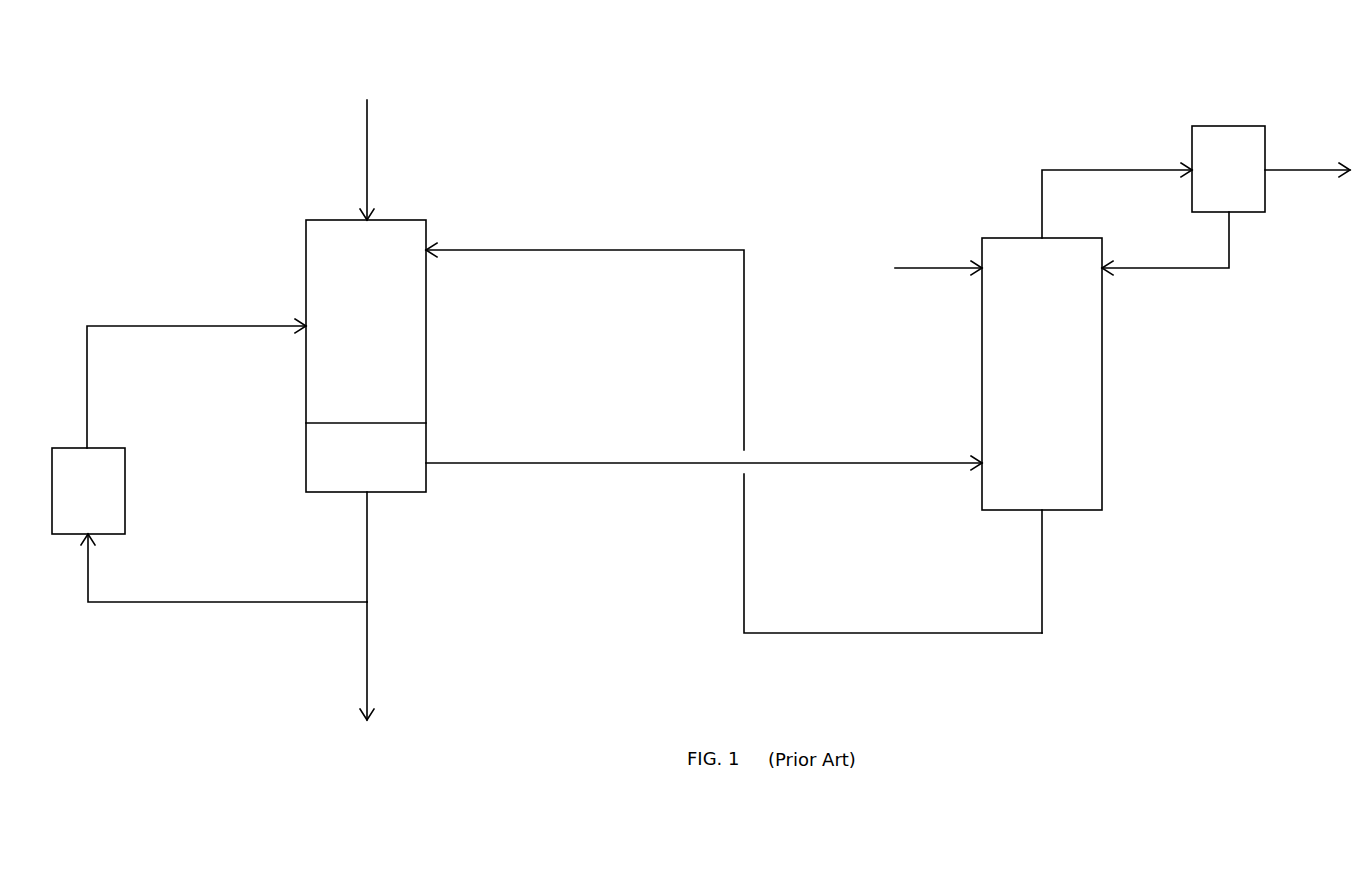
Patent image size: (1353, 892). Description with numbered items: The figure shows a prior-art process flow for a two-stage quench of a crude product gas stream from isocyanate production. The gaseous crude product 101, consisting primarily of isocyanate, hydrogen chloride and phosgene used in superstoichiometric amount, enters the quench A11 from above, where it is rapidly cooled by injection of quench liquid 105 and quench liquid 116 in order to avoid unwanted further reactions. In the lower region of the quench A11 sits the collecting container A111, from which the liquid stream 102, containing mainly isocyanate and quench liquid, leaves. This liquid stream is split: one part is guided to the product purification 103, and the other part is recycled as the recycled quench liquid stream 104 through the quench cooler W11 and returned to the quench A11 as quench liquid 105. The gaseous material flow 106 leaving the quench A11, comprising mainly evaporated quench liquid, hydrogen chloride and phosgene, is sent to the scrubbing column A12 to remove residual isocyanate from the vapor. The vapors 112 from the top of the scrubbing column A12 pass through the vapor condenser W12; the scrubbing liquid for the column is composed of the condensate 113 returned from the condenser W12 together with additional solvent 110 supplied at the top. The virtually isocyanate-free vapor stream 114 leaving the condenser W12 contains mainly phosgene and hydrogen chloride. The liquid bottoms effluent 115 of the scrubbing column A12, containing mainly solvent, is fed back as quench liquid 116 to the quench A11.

The gaseous crude product 101 is at (388, 160).
The liquid stream 102 is at (392, 547).
The product purification stream 103 is at (388, 661).
The recycled quench liquid stream 104 is at (224, 568).
The quench liquid 105 is at (196, 372).
The gaseous material flow 106 is at (704, 451).
The additional solvent 110 is at (938, 257).
The vapors 112 is at (1117, 190).
The condensate 113 is at (1165, 243).
The virtually isocyanate-free vapor stream 114 is at (1307, 159).
The liquid bottoms effluent 115 is at (1066, 571).
The quench liquid 116 is at (734, 426).
The quench A11 is at (366, 356).
The collecting container A111 is at (366, 444).
The scrubbing column A12 is at (1042, 374).
The quench cooler W11 is at (88, 491).
The vapor condenser W12 is at (1228, 169).